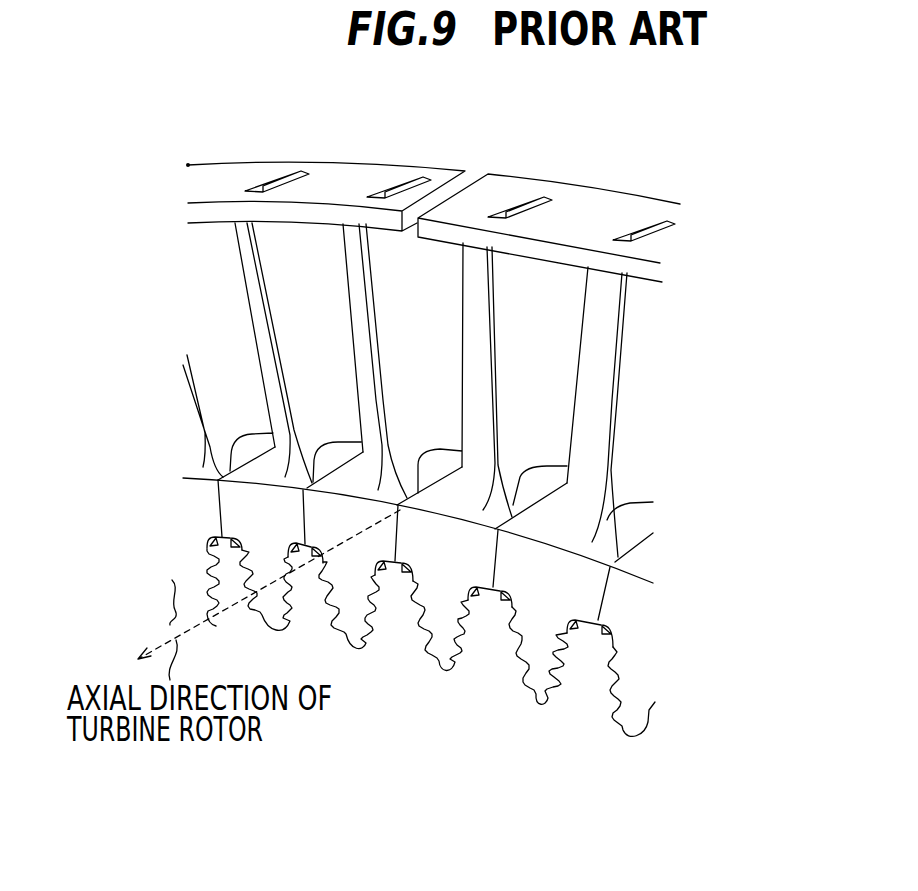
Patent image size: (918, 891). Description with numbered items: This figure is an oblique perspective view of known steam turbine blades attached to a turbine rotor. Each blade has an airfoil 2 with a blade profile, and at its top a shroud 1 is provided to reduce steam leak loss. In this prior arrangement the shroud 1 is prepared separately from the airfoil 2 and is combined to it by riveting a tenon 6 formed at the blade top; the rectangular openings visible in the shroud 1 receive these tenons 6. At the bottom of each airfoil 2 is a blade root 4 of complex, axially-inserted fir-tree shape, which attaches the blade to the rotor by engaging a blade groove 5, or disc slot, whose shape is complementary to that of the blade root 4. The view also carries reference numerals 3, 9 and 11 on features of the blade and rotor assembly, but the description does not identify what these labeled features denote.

The shroud 1 is at (218, 180).
The airfoil 2 is at (602, 412).
The blade root 3 is at (388, 630).
The blade root 4 is at (432, 663).
The blade groove 5 is at (460, 637).
The tenon 6 is at (527, 196).
The platform 9 is at (630, 527).
The blade profile portion 11 is at (608, 403).